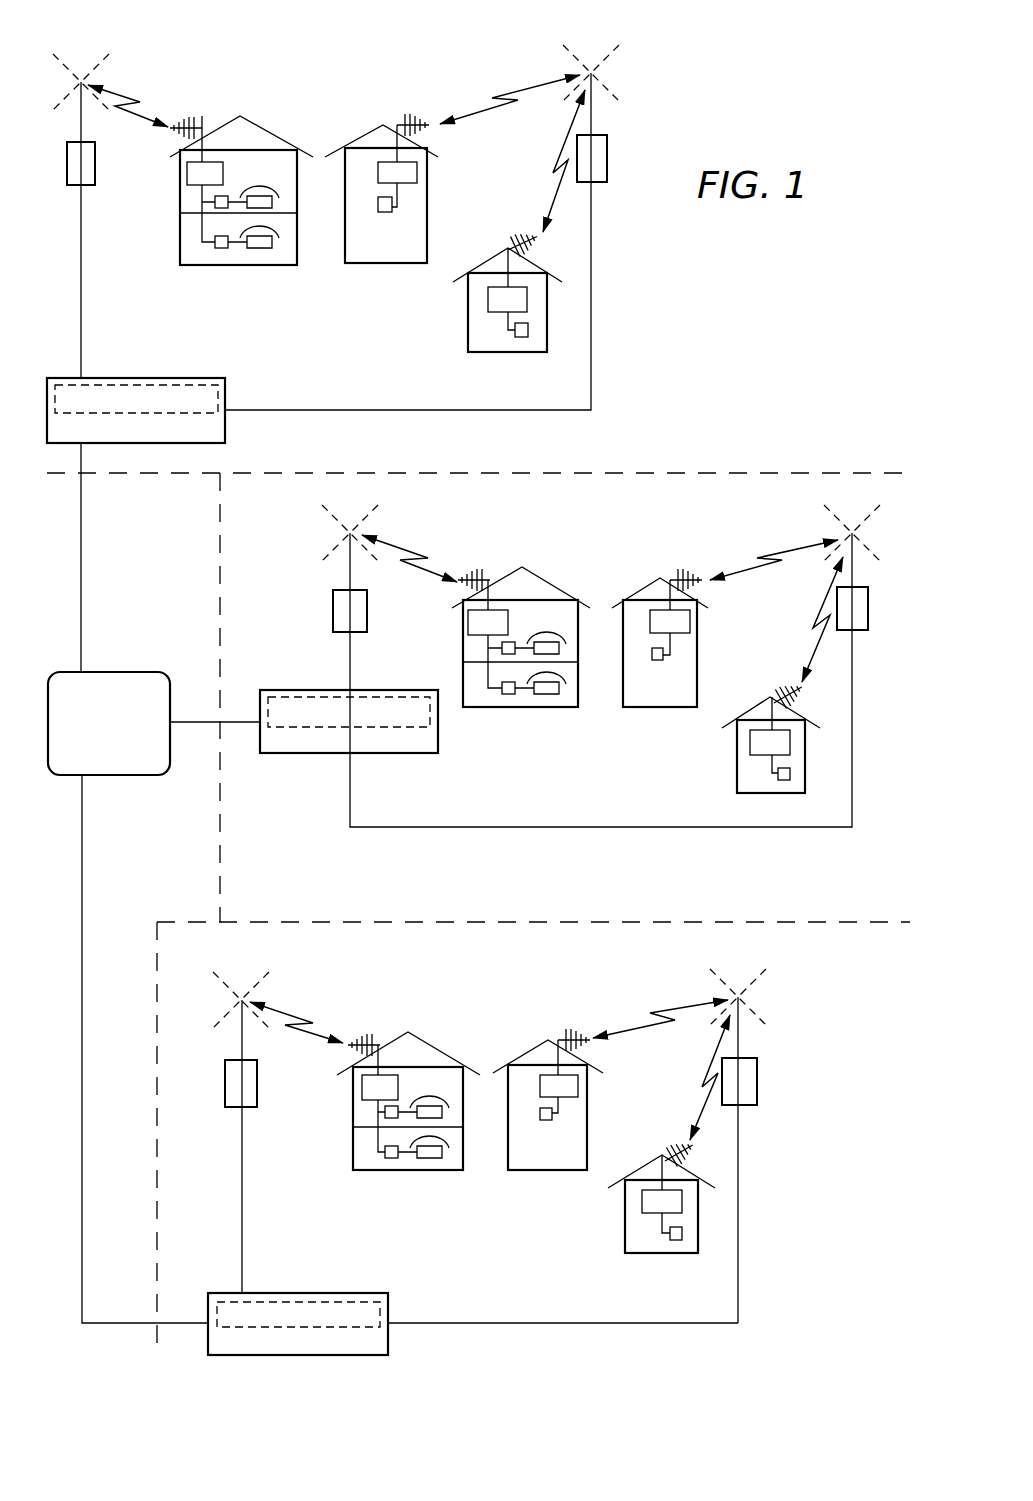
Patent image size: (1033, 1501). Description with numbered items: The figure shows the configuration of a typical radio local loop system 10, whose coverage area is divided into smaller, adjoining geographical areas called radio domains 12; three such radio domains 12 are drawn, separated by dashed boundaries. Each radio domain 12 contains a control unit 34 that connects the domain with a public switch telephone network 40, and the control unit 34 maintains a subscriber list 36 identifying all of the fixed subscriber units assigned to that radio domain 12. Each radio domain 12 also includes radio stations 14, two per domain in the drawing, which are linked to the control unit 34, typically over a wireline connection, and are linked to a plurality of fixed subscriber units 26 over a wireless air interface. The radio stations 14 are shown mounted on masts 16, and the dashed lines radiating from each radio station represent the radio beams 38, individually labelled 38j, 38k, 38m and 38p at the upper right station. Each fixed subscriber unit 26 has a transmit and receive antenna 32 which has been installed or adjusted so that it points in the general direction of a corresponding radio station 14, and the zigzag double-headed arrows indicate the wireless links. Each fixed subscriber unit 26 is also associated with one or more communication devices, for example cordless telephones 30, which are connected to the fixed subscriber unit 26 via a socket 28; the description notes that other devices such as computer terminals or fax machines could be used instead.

The radio local loop system 10 is at (722, 93).
The radio domain 12 is at (624, 308).
The radio station 14 is at (95, 167).
The antenna mast / antenna 16 is at (81, 123).
The fixed subscriber unit 26 is at (187, 172).
The socket 28 is at (212, 208).
The cordless telephone 30 is at (272, 200).
The transmit and receive antenna 32 is at (202, 128).
The control unit 34 is at (225, 440).
The subscriber list 36 is at (129, 378).
The radio beam / sector 38 is at (62, 65).
The radio beam j 38j is at (596, 52).
The radio beam k 38k is at (612, 73).
The radio beam m 38m is at (620, 99).
The radio beam p 38p is at (567, 66).
The public switch telephone network 40 is at (112, 672).